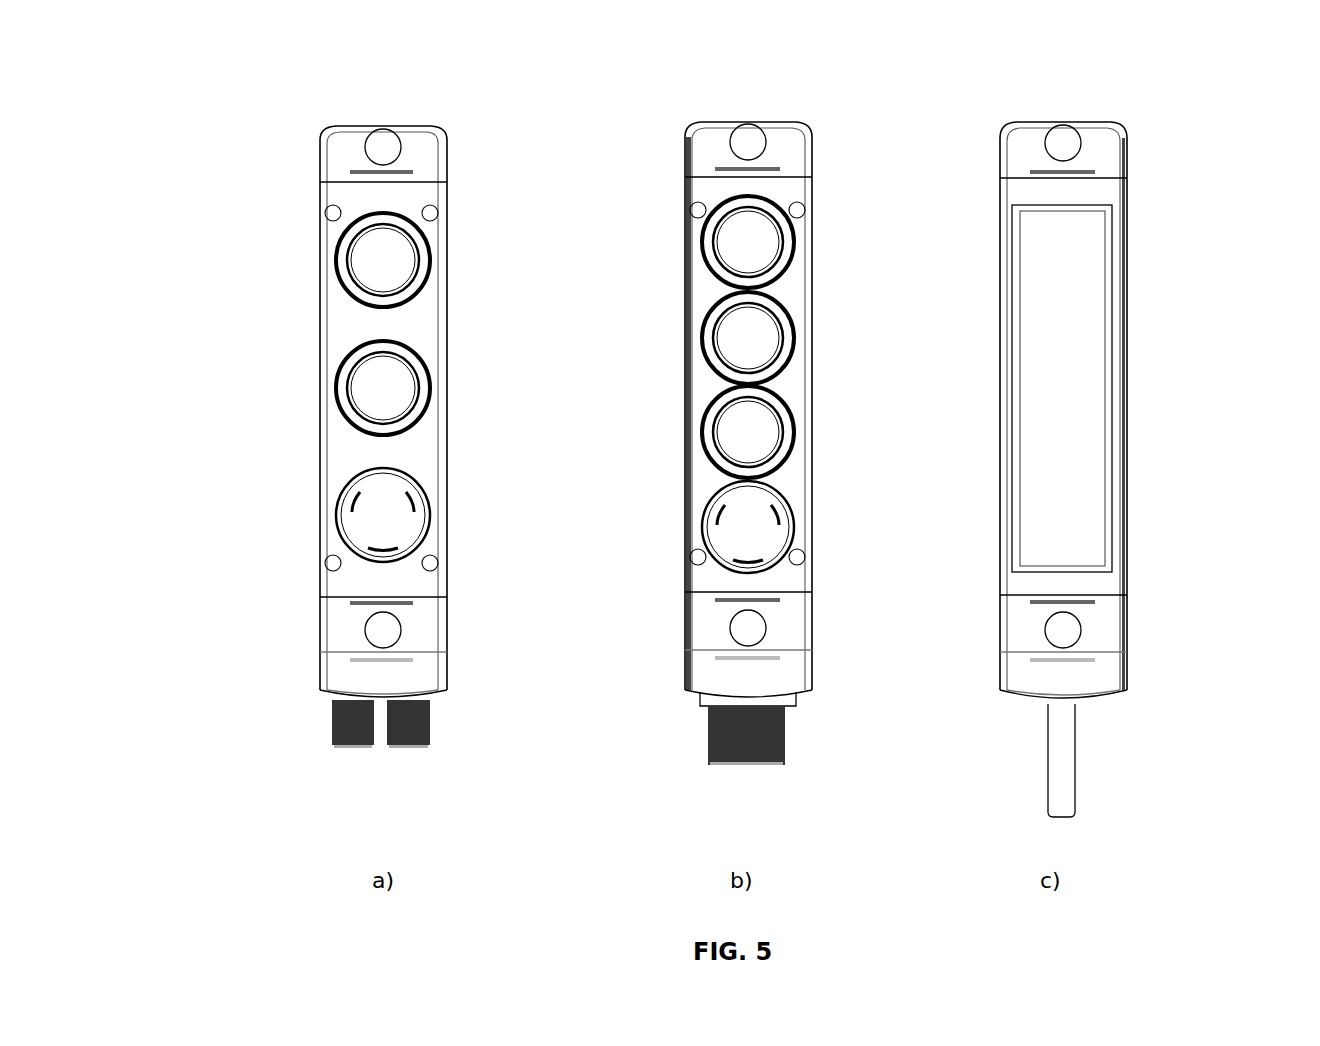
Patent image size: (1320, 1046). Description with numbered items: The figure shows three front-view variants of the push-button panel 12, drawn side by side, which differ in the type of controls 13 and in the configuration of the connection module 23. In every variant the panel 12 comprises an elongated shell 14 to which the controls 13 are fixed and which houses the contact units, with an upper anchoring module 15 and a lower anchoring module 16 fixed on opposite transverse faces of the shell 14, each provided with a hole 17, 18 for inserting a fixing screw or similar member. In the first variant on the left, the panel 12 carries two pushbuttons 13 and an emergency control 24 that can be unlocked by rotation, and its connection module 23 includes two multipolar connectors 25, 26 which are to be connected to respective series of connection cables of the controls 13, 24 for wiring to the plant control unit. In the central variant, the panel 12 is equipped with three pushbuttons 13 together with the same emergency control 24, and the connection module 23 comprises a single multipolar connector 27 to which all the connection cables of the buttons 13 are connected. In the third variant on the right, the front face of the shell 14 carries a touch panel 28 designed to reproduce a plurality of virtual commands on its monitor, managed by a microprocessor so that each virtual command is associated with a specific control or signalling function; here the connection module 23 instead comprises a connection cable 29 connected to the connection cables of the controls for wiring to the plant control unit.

The push-button panel 12 is at (208, 168).
The controls 13 is at (370, 270).
The shell 14 is at (336, 458).
The upper anchoring module 15 is at (331, 163).
The lower anchoring module 16 is at (331, 632).
The hole 17 is at (383, 142).
The hole 18 is at (392, 628).
The connection module 23 is at (326, 690).
The emergency control 24 is at (361, 520).
The multipolar connector 25 is at (353, 749).
The multipolar connector 26 is at (410, 749).
The single multipolar connector 27 is at (768, 767).
The touch panel 28 is at (1062, 388).
The connection cable 29 is at (1050, 790).